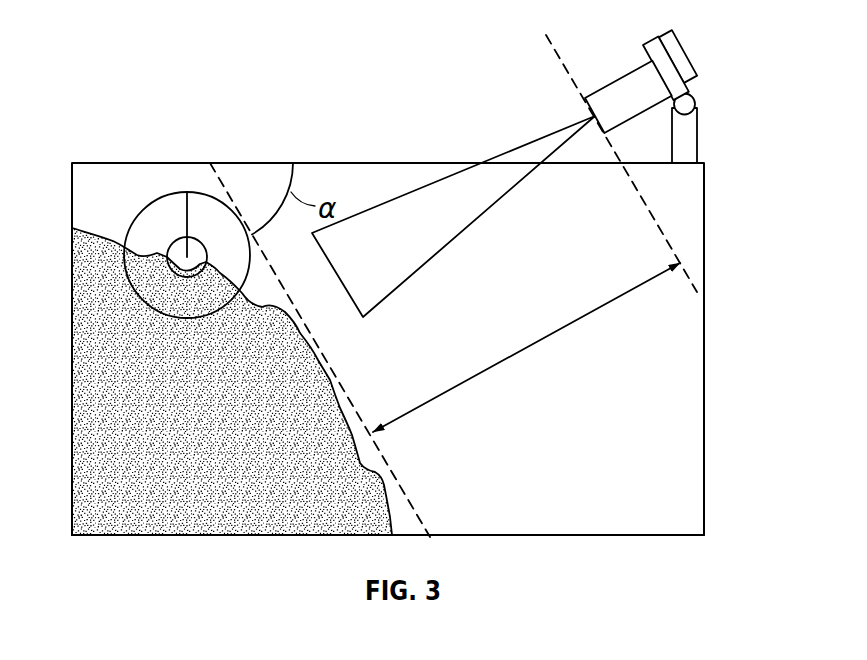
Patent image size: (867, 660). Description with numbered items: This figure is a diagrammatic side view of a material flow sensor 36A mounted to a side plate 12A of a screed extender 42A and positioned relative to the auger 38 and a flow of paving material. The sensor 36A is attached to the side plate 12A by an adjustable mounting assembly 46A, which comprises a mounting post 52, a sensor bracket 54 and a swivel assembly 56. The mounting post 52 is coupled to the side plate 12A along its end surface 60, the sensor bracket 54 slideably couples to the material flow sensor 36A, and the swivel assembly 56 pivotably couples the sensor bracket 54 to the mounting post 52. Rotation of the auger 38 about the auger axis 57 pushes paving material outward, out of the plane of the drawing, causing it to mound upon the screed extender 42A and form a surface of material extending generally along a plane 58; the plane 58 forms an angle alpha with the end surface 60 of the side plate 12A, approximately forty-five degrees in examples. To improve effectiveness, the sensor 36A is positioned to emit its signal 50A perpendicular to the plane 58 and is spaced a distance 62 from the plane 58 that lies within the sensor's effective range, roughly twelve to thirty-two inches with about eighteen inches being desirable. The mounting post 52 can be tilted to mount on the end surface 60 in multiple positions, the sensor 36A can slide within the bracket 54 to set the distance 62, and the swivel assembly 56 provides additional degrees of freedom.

The side plate 12A is at (407, 177).
The material flow sensor 36A is at (688, 54).
The auger 38 is at (152, 203).
The screed extender 42A is at (567, 535).
The adjustable mounting assembly 46A is at (692, 90).
The signal 50A is at (478, 217).
The mounting post 52 is at (698, 155).
The sensor bracket 54 is at (650, 44).
The swivel assembly 56 is at (690, 100).
The auger axis 57 is at (186, 255).
The plane 58 is at (330, 368).
The end surface 60 is at (241, 163).
The distance 62 is at (532, 343).